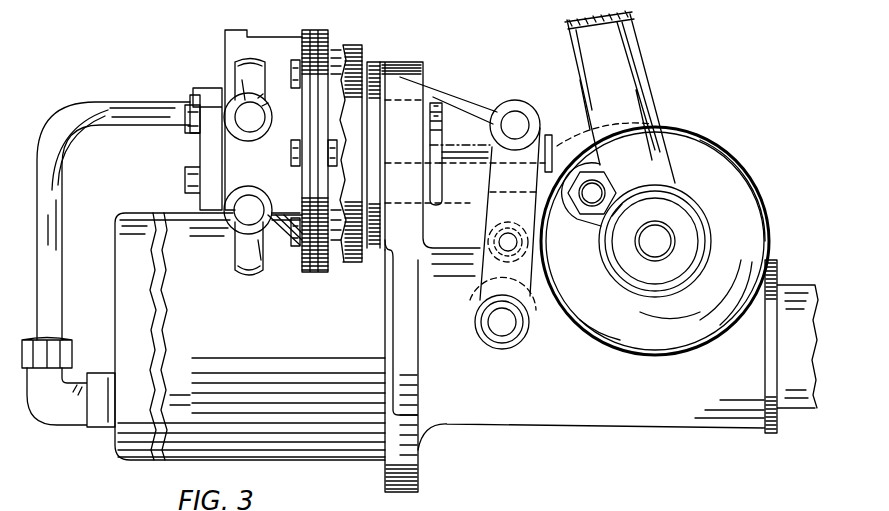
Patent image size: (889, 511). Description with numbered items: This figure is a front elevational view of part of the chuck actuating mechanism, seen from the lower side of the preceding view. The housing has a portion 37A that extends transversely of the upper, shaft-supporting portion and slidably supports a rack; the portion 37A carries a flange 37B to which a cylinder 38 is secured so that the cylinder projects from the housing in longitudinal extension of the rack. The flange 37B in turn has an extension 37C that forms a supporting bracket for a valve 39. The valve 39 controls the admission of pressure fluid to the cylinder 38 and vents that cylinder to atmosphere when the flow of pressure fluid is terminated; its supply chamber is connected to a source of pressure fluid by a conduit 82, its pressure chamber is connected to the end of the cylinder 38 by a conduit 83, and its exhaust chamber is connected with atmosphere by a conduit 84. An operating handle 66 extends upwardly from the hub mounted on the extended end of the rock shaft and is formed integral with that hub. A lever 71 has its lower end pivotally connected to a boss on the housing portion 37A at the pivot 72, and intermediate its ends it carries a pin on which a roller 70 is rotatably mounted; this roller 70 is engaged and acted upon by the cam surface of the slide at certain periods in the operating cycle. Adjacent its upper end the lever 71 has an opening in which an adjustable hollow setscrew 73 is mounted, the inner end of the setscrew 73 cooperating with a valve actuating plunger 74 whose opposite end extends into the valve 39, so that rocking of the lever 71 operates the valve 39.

The housing portion 37A is at (516, 386).
The flange 37B is at (418, 470).
The extension 37C is at (408, 62).
The cylinder 38 is at (278, 336).
The valve 39 is at (328, 35).
The operating handle 66 is at (630, 35).
The roller 70 is at (542, 267).
The lever 71 is at (483, 208).
The pivotal connection 72 is at (473, 325).
The adjustable hollow setscrew 73 is at (548, 134).
The valve actuating plunger 74 is at (463, 158).
The conduit 82 is at (265, 62).
The conduit 83 is at (62, 290).
The conduit 84 is at (253, 270).